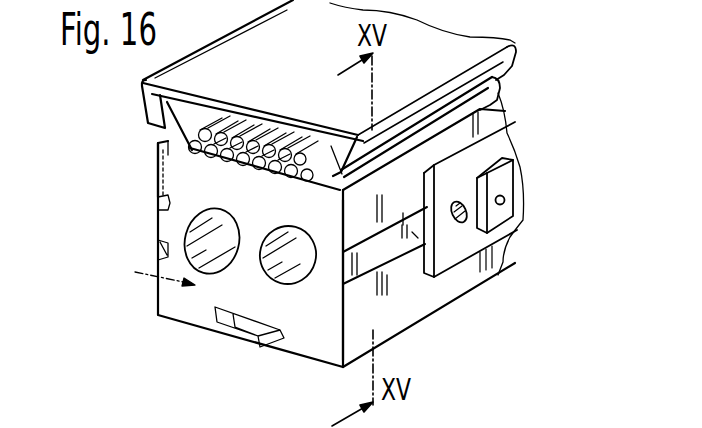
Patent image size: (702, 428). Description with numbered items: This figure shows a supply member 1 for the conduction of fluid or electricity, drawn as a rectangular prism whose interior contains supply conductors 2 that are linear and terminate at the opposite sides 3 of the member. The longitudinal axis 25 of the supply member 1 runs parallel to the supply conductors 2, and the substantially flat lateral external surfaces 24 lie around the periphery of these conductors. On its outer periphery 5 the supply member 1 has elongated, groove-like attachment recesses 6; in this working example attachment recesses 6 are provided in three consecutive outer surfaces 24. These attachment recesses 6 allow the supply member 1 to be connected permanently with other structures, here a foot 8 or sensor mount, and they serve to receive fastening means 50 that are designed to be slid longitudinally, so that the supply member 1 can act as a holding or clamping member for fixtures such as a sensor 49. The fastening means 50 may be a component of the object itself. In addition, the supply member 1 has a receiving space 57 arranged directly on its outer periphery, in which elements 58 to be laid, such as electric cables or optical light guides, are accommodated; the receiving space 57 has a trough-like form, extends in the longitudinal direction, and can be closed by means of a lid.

The supply member 1 is at (173, 310).
The supply conductor 2 is at (283, 227).
The side of the member 3 is at (316, 318).
The outer periphery 5 is at (455, 276).
The attachment recess 6 is at (162, 226).
The foot 8 is at (420, 230).
The lateral external surface 24 is at (158, 162).
The longitudinal axis 25 is at (151, 276).
The sensor 49 is at (505, 180).
The fastening means 50 is at (412, 233).
The receiving space 57 is at (192, 118).
The elements to be laid 58 is at (240, 133).